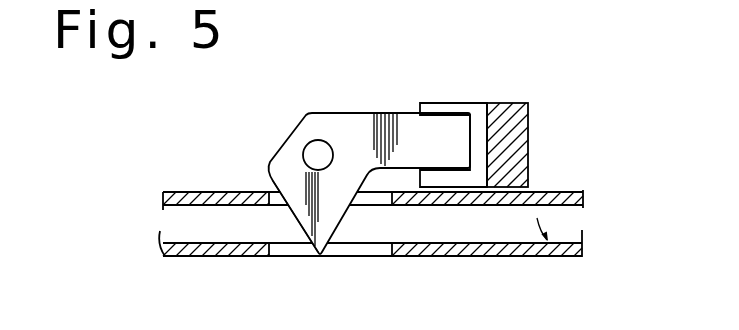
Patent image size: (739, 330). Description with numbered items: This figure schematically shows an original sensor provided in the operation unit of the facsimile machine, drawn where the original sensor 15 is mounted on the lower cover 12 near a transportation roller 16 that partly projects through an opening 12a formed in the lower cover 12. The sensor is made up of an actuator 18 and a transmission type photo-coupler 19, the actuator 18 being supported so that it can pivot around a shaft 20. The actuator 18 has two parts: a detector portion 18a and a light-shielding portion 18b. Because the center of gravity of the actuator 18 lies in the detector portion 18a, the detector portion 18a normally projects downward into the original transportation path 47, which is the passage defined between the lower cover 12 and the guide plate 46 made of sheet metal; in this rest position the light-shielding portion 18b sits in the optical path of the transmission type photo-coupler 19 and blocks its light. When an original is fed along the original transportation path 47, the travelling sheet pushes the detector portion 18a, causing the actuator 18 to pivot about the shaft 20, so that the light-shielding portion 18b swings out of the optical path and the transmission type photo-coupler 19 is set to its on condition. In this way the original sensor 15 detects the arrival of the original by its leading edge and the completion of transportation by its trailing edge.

The lower cover 12 is at (569, 207).
The opening 12a is at (377, 205).
The original sensor 15 is at (397, 104).
The transportation roller 16 is at (474, 145).
The actuator 18 is at (340, 158).
The detector portion 18a is at (297, 215).
The light-shielding portion 18b is at (460, 122).
The transmission type photo-coupler 19 is at (528, 131).
The shaft 20 is at (305, 152).
The guide plate 46 is at (488, 257).
The original transportation path 47 is at (553, 257).